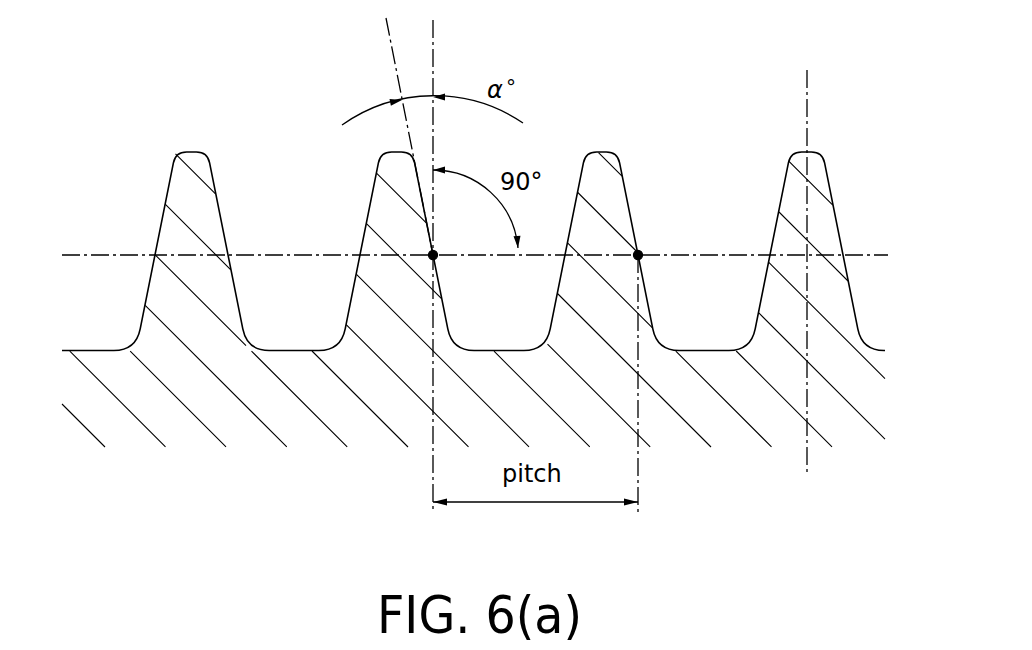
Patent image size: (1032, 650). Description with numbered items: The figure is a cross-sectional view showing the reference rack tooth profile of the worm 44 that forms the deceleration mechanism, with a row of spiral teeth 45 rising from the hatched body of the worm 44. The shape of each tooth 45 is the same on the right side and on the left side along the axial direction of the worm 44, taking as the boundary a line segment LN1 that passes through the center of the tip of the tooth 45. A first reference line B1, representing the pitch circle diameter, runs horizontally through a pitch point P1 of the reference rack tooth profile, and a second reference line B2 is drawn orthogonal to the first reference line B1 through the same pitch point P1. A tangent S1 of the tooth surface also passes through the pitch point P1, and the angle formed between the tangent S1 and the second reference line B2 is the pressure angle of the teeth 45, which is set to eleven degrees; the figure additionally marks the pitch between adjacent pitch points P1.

The worm 44 is at (277, 408).
The teeth of the worm 45 is at (395, 223).
The first reference line B1 is at (292, 254).
The second reference line B2 is at (433, 43).
The tangent of the surface of the teeth S1 is at (393, 55).
The line segment LN1 is at (806, 112).
The pitch point P1 is at (435, 257).